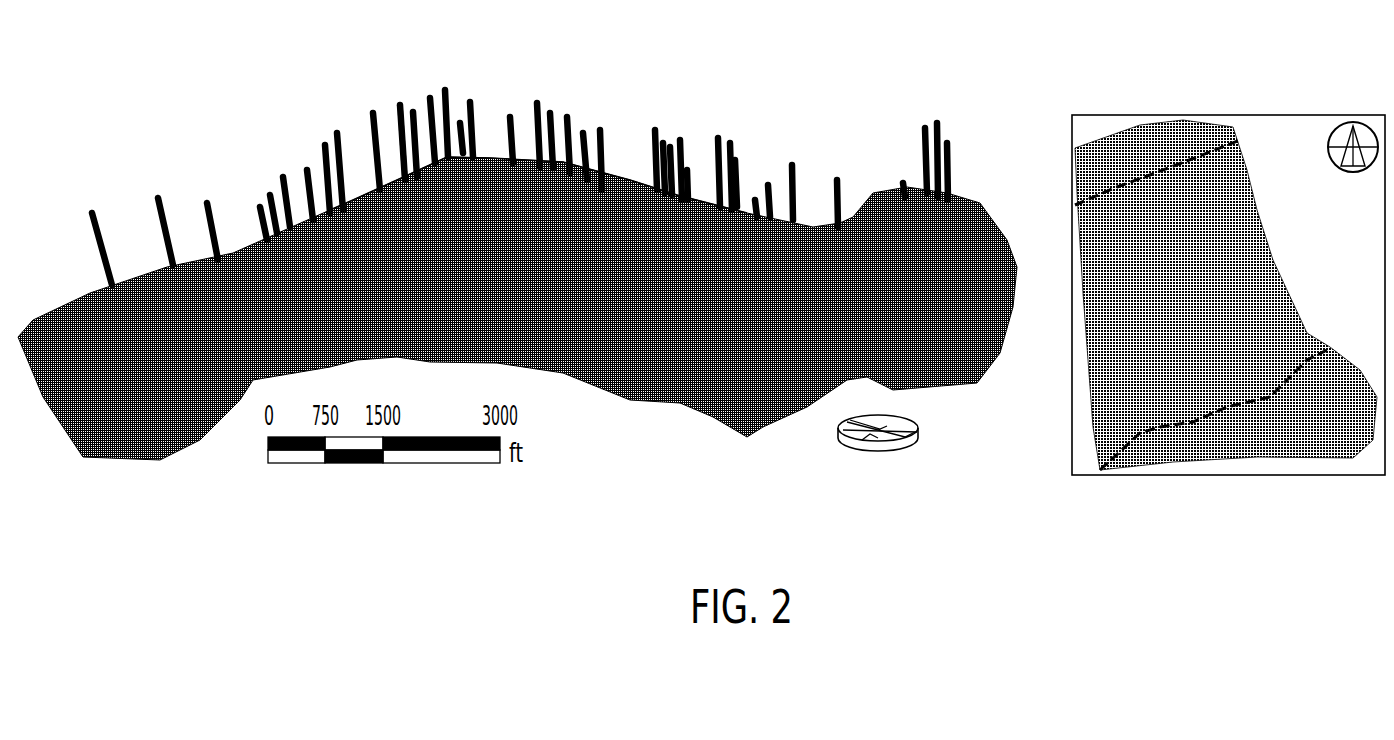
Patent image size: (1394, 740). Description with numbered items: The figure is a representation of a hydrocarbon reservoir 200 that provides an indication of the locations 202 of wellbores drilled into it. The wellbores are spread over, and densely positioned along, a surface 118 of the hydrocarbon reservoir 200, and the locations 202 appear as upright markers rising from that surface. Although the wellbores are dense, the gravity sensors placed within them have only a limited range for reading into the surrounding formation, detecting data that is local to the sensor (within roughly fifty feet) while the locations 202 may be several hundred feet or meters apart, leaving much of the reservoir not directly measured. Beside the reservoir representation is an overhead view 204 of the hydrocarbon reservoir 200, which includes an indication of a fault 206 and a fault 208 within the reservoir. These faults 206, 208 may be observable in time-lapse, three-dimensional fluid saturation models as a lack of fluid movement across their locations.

The hydrocarbon reservoir 200 is at (584, 77).
The surface 118 is at (632, 193).
The locations 202 is at (94, 216).
The overhead view 204 is at (1162, 82).
The fault 206 is at (1108, 190).
The fault 208 is at (1308, 336).